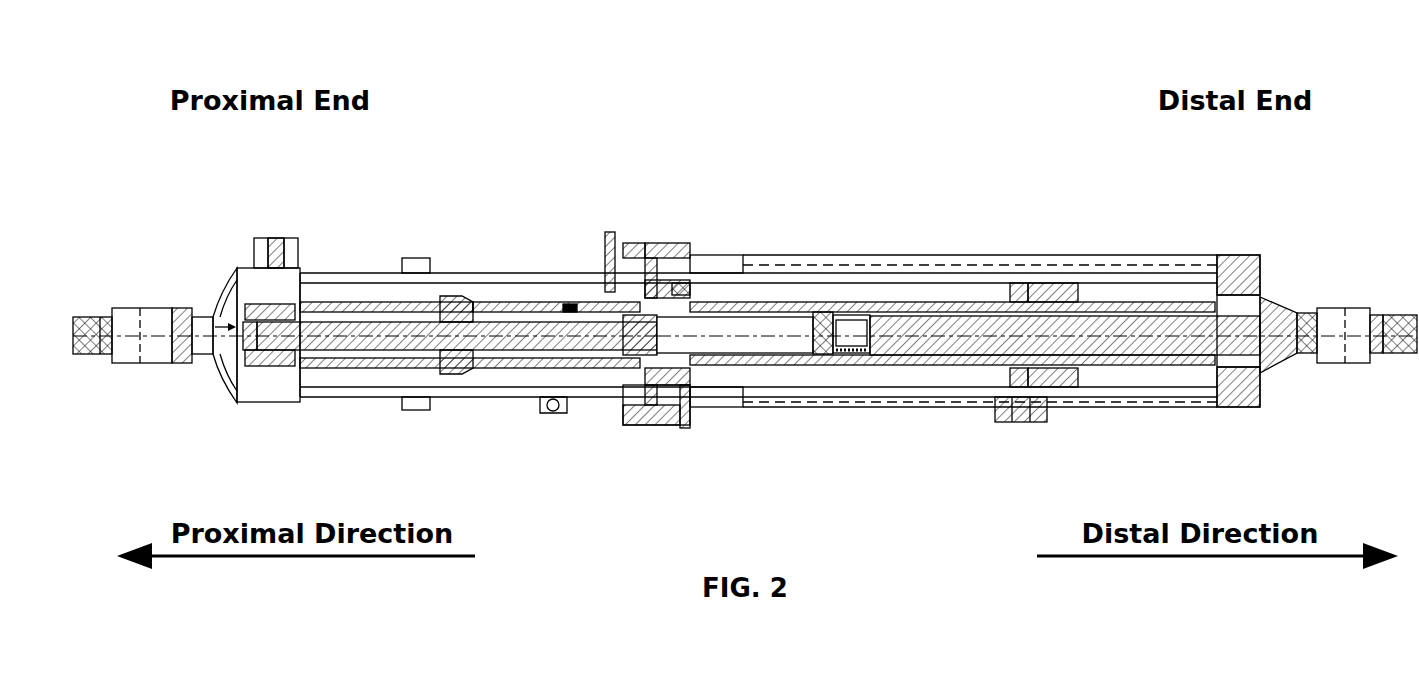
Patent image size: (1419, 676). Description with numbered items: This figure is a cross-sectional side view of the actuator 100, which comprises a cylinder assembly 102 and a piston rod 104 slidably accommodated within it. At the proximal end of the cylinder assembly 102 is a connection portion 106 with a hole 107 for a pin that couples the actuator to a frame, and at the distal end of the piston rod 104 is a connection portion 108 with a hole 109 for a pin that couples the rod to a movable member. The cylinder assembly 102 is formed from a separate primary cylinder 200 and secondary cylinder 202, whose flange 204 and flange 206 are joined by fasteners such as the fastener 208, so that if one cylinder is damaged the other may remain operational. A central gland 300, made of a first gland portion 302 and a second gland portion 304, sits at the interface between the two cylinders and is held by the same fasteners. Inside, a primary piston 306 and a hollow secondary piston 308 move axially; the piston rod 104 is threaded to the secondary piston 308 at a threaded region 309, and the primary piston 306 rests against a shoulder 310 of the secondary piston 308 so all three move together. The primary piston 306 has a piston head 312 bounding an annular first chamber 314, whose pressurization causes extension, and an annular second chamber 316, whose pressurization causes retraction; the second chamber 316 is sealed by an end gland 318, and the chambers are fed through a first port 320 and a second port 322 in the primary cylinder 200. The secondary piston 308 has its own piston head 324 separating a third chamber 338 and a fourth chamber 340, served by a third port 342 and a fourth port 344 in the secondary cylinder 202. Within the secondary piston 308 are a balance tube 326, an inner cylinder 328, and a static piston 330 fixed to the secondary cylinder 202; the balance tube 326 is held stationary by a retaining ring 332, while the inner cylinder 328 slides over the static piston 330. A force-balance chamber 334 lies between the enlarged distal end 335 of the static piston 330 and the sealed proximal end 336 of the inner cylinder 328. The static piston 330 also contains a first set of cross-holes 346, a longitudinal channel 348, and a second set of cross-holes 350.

The actuator 100 is at (303, 53).
The cylinder assembly 102 is at (447, 405).
The piston rod 104 is at (1283, 313).
The connection portion 106 is at (100, 358).
The hole 107 is at (150, 305).
The connection portion 108 is at (1350, 297).
The hole 109 is at (1350, 347).
The primary cylinder 200 is at (830, 292).
The secondary cylinder 202 is at (375, 268).
The flange 204 is at (692, 262).
The flange 206 is at (627, 250).
The fastener 208 is at (660, 413).
The central gland 300 is at (655, 428).
The first gland portion 302 is at (683, 270).
The second gland portion 304 is at (640, 257).
The primary piston 306 is at (903, 302).
The secondary piston 308 is at (498, 300).
The threaded region 309 is at (930, 385).
The shoulder 310 is at (840, 305).
The piston head 312 is at (847, 375).
The first chamber 314 is at (775, 283).
The second chamber 316 is at (973, 293).
The end gland 318 is at (1047, 275).
The first port 320 is at (683, 423).
The second port 322 is at (1030, 425).
The piston head 324 is at (433, 382).
The balance tube 326 is at (380, 302).
The inner cylinder 328 is at (780, 357).
The static piston 330 is at (300, 352).
The retaining ring 332 is at (273, 320).
The force-balance chamber 334 is at (570, 313).
The enlarged distal end 335 is at (620, 393).
The proximal end 336 is at (450, 300).
The third chamber 338 is at (407, 293).
The fourth chamber 340 is at (492, 380).
The third port 342 is at (290, 265).
The fourth port 344 is at (603, 257).
The first set of cross-holes 346 is at (230, 322).
The longitudinal channel 348 is at (328, 350).
The second set of cross-holes 350 is at (597, 380).